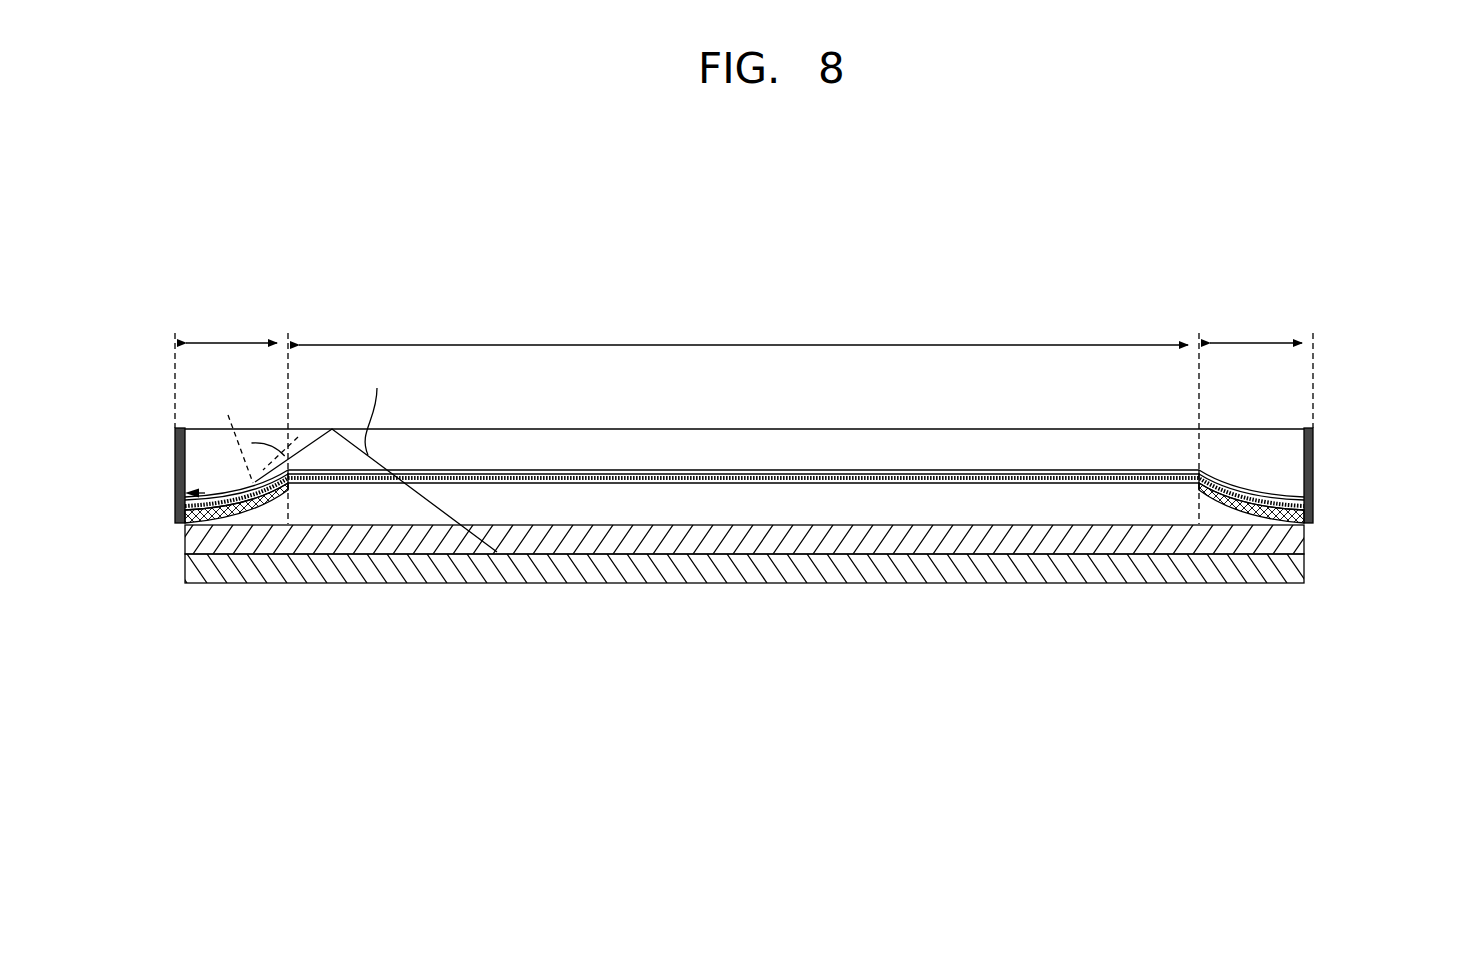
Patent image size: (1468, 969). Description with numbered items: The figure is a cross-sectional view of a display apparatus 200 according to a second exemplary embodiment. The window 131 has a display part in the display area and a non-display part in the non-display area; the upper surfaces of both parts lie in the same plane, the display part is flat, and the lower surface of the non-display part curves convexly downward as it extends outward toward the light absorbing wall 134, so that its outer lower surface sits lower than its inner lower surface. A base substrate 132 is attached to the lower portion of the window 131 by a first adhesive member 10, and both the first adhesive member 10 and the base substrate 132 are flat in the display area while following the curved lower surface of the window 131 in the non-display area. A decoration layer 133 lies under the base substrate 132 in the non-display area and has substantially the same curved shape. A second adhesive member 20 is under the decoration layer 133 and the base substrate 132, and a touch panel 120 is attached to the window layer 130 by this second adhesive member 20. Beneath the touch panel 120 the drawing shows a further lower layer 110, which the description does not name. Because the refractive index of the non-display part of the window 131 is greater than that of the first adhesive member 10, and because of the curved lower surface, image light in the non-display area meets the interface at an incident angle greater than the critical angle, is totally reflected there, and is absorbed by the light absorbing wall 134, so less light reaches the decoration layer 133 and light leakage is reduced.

The display apparatus 200 is at (1166, 264).
The first adhesive member 10 is at (620, 470).
The second adhesive member 20 is at (715, 507).
The lower cover 110 is at (1290, 572).
The touch panel 120 is at (1290, 543).
The window layer 130 is at (1398, 448).
The window 131 is at (1290, 460).
The base substrate 132 is at (1290, 513).
The decoration layer 133 is at (1290, 525).
The light absorbing wall 134 is at (1310, 483).